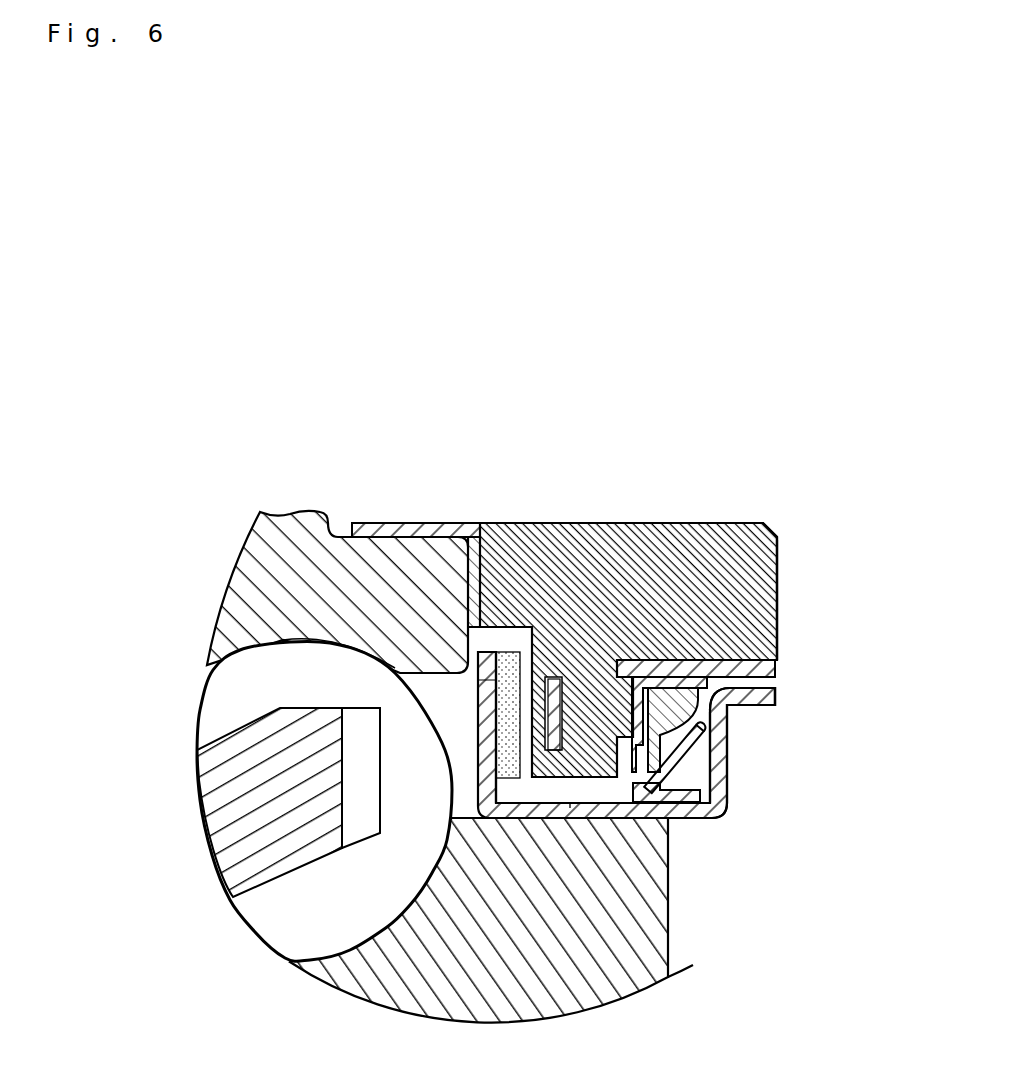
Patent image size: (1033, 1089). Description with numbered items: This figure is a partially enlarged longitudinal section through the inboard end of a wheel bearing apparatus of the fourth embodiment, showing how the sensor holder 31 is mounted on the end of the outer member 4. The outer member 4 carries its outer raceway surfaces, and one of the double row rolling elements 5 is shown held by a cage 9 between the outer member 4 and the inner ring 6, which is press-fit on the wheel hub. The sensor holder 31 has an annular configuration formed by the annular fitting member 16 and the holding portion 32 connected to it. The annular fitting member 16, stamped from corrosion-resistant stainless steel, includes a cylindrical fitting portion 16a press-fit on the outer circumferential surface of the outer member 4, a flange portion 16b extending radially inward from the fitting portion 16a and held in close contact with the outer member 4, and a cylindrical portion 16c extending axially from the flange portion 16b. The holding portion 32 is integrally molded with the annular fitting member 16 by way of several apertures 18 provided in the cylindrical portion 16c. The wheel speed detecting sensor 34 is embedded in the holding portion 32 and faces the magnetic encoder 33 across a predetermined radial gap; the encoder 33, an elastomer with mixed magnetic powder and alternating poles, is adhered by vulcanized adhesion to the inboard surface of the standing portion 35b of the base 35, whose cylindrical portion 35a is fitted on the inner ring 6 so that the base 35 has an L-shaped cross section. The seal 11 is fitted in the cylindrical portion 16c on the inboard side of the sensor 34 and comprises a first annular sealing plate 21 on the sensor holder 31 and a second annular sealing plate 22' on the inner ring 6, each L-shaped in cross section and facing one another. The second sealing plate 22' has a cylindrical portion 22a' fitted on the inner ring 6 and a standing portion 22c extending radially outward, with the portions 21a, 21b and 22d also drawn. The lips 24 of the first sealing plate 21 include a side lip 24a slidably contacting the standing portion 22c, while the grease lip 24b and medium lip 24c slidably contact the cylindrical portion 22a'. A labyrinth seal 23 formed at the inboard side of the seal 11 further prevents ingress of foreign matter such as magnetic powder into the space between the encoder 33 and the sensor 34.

The outer member 4 is at (262, 583).
The rolling elements 5 is at (232, 688).
The inner ring 6 is at (347, 980).
The cage 9 is at (248, 860).
The seal 11 is at (780, 700).
The annular fitting member 16 is at (564, 583).
The cylindrical fitting portion 16a is at (430, 522).
The flange portion 16b is at (490, 545).
The cylindrical portion 16c is at (628, 610).
The aperture 18 is at (478, 672).
The first annular sealing plate 21 is at (720, 594).
The seal inner portion 21a is at (668, 700).
The seal outer portion 21b is at (655, 683).
The second annular sealing plate 22' is at (736, 763).
The cylindrical portion 22a' is at (714, 821).
The standing portion 22c is at (723, 765).
The lid upper portion 22d is at (750, 708).
The labyrinth seal 23 is at (767, 660).
The engaging portion 24 is at (730, 857).
The side lip 24a is at (668, 822).
The grease lip 24b is at (640, 825).
The medium lip 24c is at (678, 832).
The sensor holder 31 is at (633, 504).
The holding portion 32 is at (650, 580).
The magnetic encoder 33 is at (548, 728).
The wheel speed detecting sensor 34 is at (548, 712).
The base 35 is at (551, 778).
The cylindrical portion 35a is at (527, 818).
The standing portion 35b is at (485, 775).